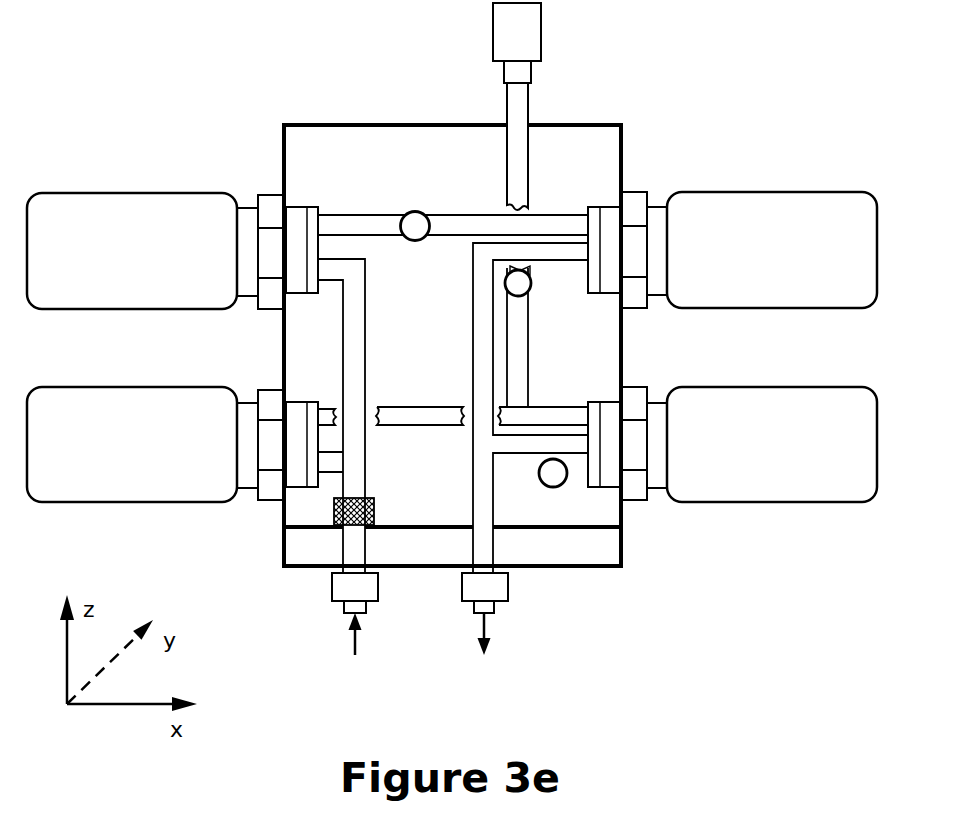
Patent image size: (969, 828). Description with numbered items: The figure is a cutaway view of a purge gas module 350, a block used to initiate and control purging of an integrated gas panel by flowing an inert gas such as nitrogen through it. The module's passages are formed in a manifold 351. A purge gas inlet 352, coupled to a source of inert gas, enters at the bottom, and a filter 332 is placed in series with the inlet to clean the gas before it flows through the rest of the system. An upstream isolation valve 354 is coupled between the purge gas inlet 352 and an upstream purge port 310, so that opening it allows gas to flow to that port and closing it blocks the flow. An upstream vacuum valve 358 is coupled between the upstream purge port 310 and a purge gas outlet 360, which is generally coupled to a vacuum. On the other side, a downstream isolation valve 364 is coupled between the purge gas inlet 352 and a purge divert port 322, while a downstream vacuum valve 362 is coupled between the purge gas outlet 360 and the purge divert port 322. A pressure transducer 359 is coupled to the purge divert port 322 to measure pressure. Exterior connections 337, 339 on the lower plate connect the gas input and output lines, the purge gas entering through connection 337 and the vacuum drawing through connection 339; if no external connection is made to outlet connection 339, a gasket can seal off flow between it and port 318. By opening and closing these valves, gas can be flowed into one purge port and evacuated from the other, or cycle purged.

The purge gas module 350 is at (208, 134).
The manifold 351 is at (610, 165).
The pressure transducer 359 is at (528, 32).
The upstream isolation valve 354 is at (172, 251).
The upstream vacuum valve 358 is at (732, 250).
The downstream isolation valve 364 is at (172, 444).
The downstream vacuum valve 362 is at (732, 444).
The upstream purge port 310 is at (407, 212).
The purge divert port 322 is at (528, 292).
The port 318 is at (562, 482).
The purge gas inlet 352 is at (357, 453).
The filter 332 is at (374, 507).
The purge gas outlet 360 is at (483, 486).
The exterior connection 337 is at (343, 585).
The exterior outlet connection 339 is at (494, 585).